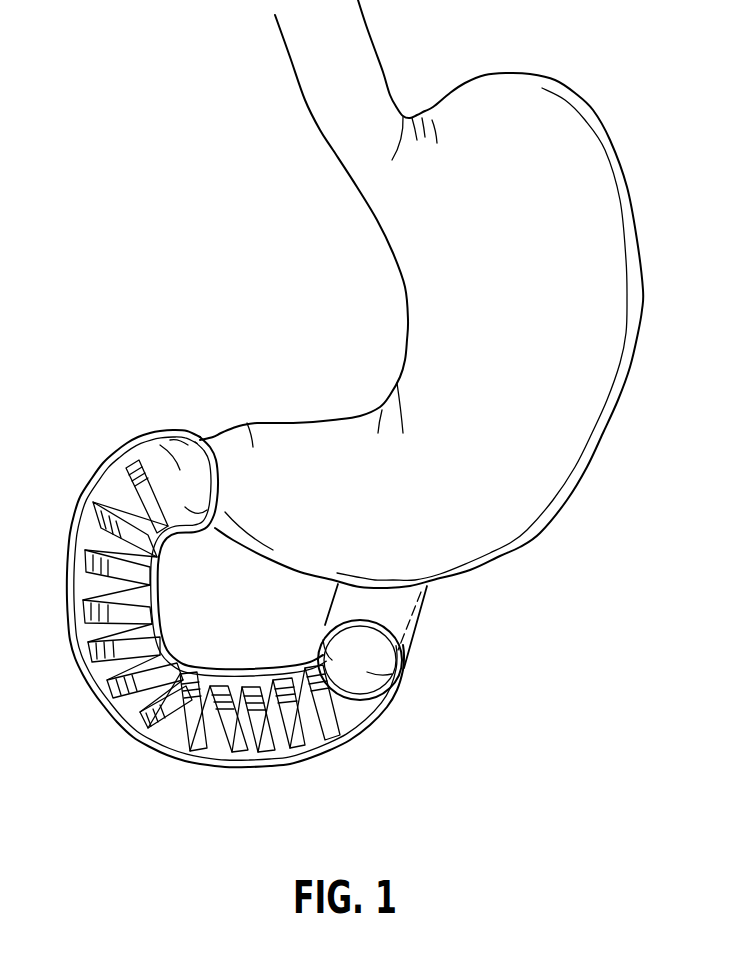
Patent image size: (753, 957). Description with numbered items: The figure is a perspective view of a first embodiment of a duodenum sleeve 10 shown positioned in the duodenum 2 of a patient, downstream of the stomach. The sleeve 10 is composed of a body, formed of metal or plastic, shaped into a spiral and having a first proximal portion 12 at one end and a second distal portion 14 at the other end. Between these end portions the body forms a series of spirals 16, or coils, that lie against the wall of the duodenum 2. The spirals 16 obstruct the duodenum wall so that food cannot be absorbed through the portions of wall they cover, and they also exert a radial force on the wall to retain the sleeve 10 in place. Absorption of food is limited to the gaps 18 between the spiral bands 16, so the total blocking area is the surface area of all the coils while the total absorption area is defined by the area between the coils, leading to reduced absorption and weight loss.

The duodenum sleeve 10 is at (213, 641).
The duodenum 2 is at (77, 572).
The first proximal portion 12 is at (112, 480).
The second distal portion 14 is at (324, 746).
The spirals 16 is at (240, 753).
The gaps 18 is at (263, 740).